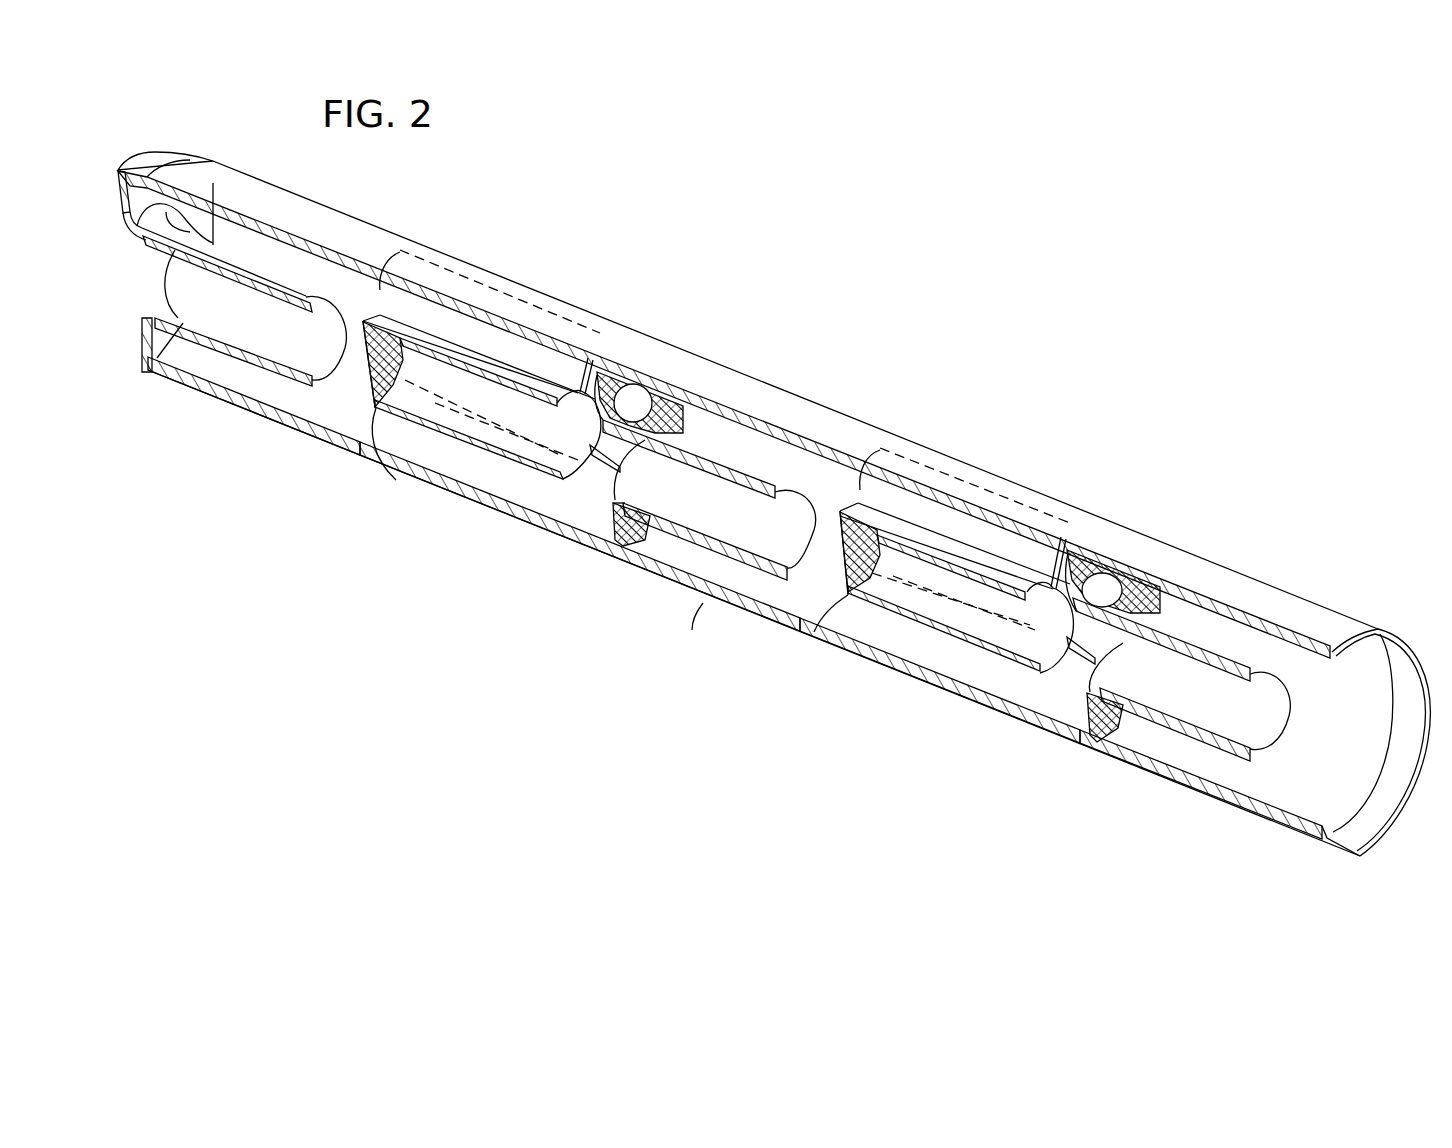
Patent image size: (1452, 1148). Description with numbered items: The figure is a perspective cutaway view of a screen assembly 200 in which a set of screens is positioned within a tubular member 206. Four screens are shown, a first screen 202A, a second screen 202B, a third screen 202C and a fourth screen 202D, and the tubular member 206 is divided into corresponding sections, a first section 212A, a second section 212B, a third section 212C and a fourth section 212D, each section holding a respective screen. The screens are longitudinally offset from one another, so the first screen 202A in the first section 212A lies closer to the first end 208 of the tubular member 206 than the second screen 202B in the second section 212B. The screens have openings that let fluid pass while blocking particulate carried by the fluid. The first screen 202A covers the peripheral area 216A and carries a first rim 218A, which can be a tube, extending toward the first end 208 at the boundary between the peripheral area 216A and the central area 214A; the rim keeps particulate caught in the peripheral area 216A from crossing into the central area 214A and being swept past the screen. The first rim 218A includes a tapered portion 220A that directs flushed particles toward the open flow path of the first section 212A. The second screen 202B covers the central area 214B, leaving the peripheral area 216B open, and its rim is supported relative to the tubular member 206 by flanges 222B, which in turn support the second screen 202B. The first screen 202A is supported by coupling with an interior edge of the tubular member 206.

The screen assembly 200 is at (1095, 443).
The first screen 202A is at (1199, 623).
The second screen 202B is at (903, 602).
The third screen 202C is at (628, 366).
The fourth screen 202D is at (298, 427).
The tubular member 206 is at (1370, 625).
The first end 208 is at (1370, 848).
The first section 212A is at (1210, 792).
The second section 212B is at (942, 687).
The third section 212C is at (716, 603).
The fourth section 212D is at (470, 505).
The central area 214A is at (1216, 700).
The central area 214B is at (1052, 623).
The peripheral area 216A is at (1207, 760).
The peripheral area 216B is at (991, 676).
The first rim 218A is at (1222, 648).
The tapered portion 220A is at (1148, 584).
The flanges 222B is at (1050, 560).